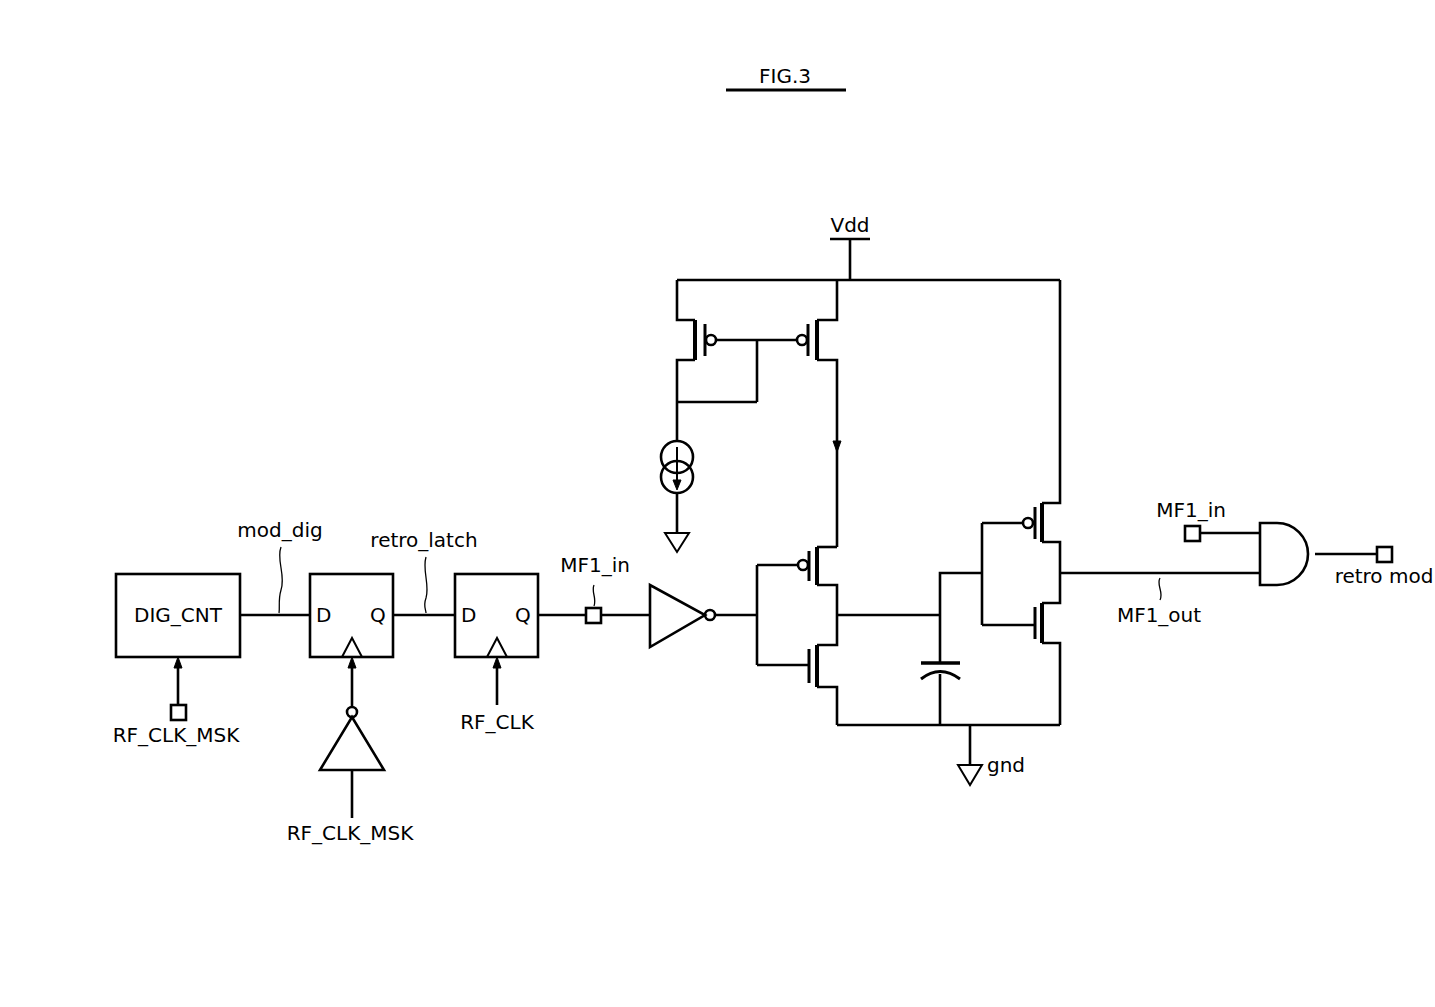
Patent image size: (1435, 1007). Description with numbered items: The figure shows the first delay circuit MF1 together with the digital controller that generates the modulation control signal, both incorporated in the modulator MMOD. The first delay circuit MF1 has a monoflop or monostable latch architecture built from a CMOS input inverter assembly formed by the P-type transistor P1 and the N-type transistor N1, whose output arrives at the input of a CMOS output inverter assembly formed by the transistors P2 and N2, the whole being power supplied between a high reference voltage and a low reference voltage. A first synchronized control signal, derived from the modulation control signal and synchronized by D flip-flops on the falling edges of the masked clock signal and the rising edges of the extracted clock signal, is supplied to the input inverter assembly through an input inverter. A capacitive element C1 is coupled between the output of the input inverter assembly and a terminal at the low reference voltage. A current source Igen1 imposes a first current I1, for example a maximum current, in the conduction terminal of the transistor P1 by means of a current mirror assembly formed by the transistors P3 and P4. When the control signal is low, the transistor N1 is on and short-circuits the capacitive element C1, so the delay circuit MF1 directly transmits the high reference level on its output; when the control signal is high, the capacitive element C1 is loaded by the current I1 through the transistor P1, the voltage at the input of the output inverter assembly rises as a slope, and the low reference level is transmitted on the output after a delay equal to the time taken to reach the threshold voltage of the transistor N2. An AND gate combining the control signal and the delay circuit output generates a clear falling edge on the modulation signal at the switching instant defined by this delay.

The P-type transistor P1 is at (828, 553).
The P-type transistor P2 is at (1050, 510).
The P-type transistor P3 is at (687, 326).
The P-type transistor P4 is at (825, 326).
The N-type transistor N1 is at (828, 680).
The N-type transistor N2 is at (1050, 632).
The capacitive element C1 is at (956, 670).
The current source Igen1 is at (707, 496).
The first current I1 is at (847, 442).
The first delay circuit MF1 is at (1158, 277).
The modulator MMOD is at (1292, 216).